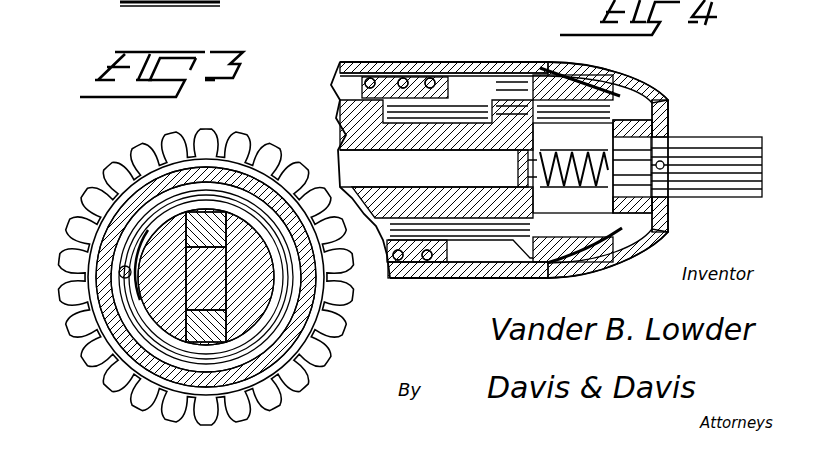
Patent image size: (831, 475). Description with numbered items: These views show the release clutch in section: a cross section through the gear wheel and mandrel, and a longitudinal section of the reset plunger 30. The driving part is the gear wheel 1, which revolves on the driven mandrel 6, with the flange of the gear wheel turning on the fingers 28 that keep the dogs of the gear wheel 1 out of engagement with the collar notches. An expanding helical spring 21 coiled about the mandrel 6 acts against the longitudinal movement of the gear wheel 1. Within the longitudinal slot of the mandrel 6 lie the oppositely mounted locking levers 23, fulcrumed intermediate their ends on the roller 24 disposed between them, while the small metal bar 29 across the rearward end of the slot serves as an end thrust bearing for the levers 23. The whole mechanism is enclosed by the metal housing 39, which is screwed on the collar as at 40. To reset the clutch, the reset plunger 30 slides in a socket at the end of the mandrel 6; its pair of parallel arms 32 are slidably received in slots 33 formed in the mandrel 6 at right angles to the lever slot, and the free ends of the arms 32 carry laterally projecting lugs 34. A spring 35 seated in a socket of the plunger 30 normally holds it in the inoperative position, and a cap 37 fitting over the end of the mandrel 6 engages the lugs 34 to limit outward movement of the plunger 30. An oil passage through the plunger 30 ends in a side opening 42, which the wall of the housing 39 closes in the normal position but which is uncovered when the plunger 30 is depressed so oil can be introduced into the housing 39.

In FIG. 3, the gear wheel 1 is at (303, 383).
In FIG. 3, the mandrel 6 is at (243, 230).
In FIG. 3, the expanding helical spring 21 is at (273, 325).
In FIG. 3, the locking levers 23 is at (197, 213).
In FIG. 3, the roller 24 is at (195, 262).
In FIG. 3, the metal housing 39 is at (220, 180).
In FIG. 3, the fingers 28 is at (186, 9).
In FIG. 3, the screw connection of housing 40 is at (204, 7).
In FIG. 4, the metal bar 29 is at (517, 162).
In FIG. 4, the reset plunger 30 is at (667, 145).
In FIG. 4, the parallel arms 32 is at (570, 110).
In FIG. 4, the slots 33 is at (470, 112).
In FIG. 4, the lugs 34 is at (550, 60).
In FIG. 4, the spring 35 is at (600, 183).
In FIG. 4, the cap 37 is at (645, 100).
In FIG. 4, the opening 42 is at (663, 168).